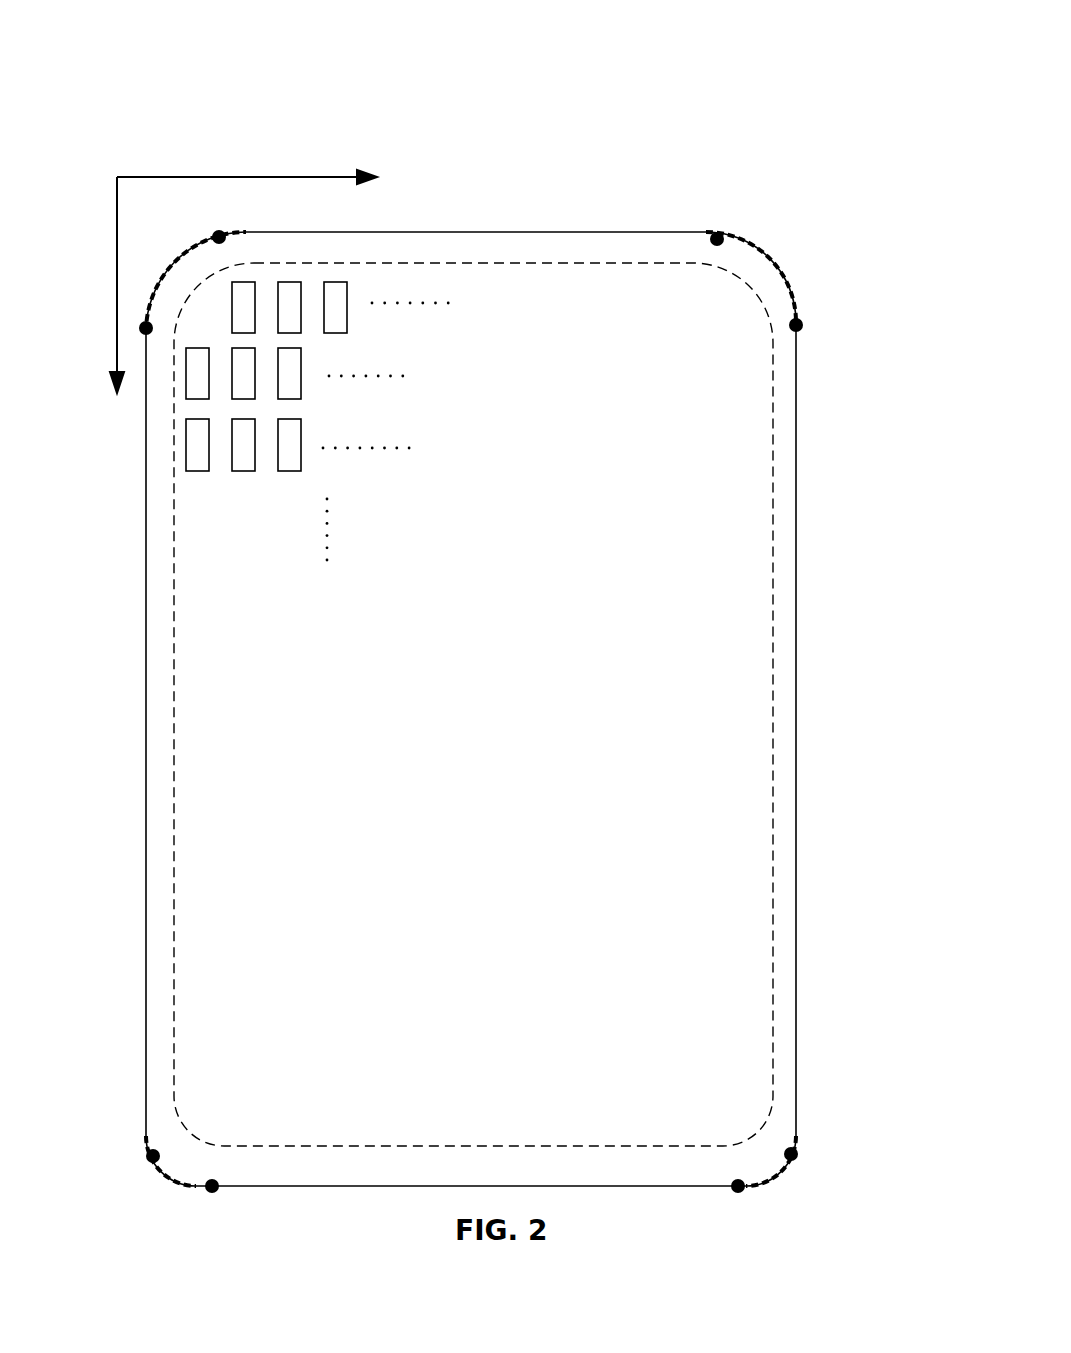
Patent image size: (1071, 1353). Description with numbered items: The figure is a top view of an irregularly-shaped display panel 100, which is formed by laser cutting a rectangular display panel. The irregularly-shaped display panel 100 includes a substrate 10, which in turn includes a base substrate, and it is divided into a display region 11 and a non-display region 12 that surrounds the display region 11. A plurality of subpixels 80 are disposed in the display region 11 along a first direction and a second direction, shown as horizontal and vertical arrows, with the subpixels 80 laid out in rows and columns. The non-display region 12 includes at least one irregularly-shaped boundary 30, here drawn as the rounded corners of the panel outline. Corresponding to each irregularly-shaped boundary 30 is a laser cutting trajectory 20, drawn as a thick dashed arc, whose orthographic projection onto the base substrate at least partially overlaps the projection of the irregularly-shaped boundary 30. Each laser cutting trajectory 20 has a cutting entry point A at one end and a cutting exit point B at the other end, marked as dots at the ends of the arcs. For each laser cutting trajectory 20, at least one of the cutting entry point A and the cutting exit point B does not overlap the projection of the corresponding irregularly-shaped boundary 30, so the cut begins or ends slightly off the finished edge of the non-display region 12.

The irregularly-shaped display panel 100 is at (740, 41).
The substrate 10 is at (536, 709).
The display region 11 is at (535, 704).
The non-display region 12 is at (841, 704).
The laser cutting trajectories 20 is at (511, 709).
The irregularly-shaped boundary 30 is at (477, 676).
The cutting entry point A is at (832, 311).
The cutting exit point B is at (754, 225).
The subpixels 80 is at (318, 443).